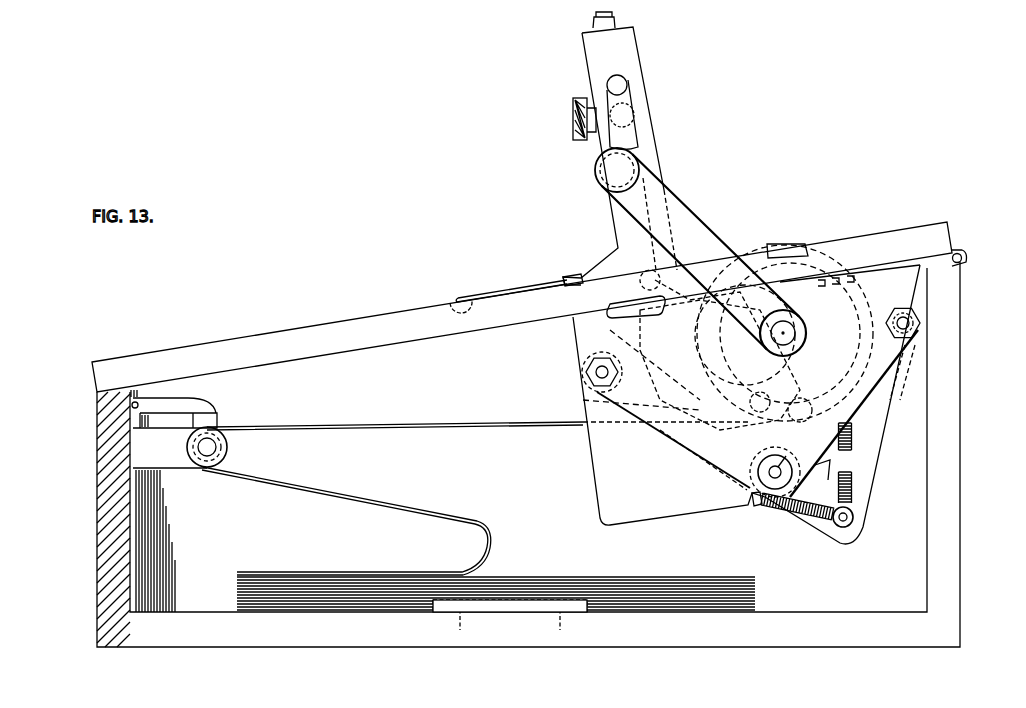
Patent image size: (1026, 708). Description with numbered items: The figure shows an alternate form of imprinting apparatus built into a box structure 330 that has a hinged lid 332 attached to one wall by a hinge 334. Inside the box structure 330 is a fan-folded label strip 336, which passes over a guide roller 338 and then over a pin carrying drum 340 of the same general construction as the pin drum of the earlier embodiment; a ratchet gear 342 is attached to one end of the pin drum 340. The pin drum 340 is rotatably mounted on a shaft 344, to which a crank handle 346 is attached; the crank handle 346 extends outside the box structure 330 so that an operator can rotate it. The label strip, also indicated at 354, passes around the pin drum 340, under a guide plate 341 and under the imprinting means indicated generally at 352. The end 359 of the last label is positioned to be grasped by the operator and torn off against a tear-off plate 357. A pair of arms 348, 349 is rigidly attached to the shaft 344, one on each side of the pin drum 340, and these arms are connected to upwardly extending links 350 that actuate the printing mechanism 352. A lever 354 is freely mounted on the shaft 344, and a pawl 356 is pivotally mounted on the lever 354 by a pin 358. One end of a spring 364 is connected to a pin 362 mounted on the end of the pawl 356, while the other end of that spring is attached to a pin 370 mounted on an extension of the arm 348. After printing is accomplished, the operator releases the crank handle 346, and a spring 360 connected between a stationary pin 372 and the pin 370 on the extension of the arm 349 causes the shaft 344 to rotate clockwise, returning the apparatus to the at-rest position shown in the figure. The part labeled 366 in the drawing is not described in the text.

The box structure 330 is at (97, 489).
The hinged lid 332 is at (405, 318).
The hinge 334 is at (961, 256).
The fan-folded label strip 336 is at (402, 577).
The guide roller 338 is at (207, 468).
The pin carrying drum 340 is at (833, 258).
The guide plate 341 is at (739, 245).
The ratchet gear 342 is at (720, 365).
The shaft 344 is at (783, 333).
The crank handle 346 is at (688, 220).
The arm 348 is at (623, 331).
The arm 349 is at (896, 372).
The links 350 is at (618, 228).
The printing mechanism 352 is at (677, 110).
The lever 354 is at (492, 421).
The pawl 356 is at (452, 303).
The tear-off plate 357 is at (558, 276).
The pin 358 is at (761, 437).
The end of the last label 359 is at (493, 300).
The spring 360 is at (851, 463).
The pin 362 is at (673, 441).
The spring 364 is at (823, 465).
The pivot nut 366 is at (918, 337).
The pin 370 is at (868, 401).
The stationary pin 372 is at (855, 533).